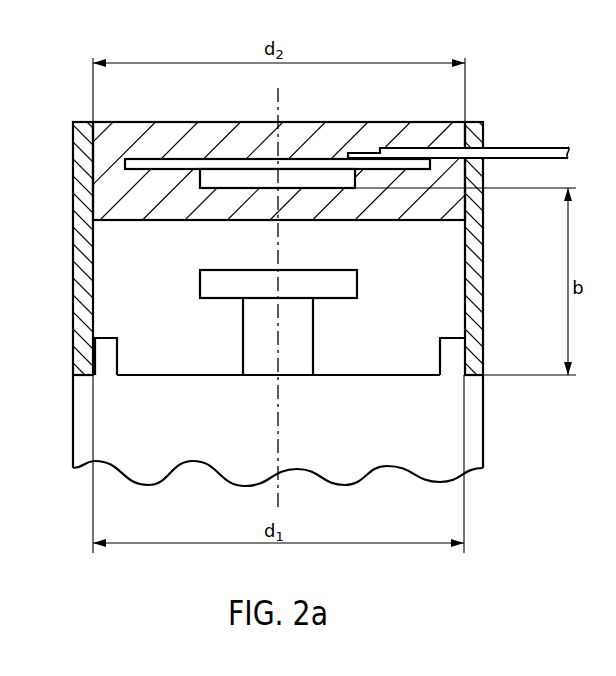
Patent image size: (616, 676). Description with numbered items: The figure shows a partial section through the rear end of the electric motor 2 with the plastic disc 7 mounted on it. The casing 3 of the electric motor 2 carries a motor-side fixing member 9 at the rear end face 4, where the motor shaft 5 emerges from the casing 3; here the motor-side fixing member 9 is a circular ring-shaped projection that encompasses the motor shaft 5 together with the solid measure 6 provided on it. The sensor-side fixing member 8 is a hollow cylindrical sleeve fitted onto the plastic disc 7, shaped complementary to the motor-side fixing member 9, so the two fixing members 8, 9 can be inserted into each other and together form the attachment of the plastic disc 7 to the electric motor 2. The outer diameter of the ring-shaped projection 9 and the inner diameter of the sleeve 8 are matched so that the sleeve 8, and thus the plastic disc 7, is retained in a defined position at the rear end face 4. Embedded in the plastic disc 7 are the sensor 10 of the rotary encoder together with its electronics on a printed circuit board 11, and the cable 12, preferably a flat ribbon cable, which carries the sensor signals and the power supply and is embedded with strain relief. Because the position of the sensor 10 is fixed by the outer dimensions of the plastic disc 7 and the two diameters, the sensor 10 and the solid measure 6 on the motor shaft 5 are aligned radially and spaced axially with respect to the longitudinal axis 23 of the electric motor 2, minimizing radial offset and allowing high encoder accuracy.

The electric motor 2 is at (63, 425).
The casing 3 is at (468, 447).
The rear end face 4 is at (135, 372).
The motor shaft 5 is at (243, 310).
The solid measure 6 is at (338, 270).
The plastic disc 7 is at (358, 133).
The sensor-side fixing member 8 is at (80, 151).
The motor-side fixing member 9 is at (103, 353).
The sensor 10 is at (312, 176).
The printed circuit board 11 is at (147, 170).
The cable 12 is at (533, 150).
The longitudinal axis 23 is at (278, 423).